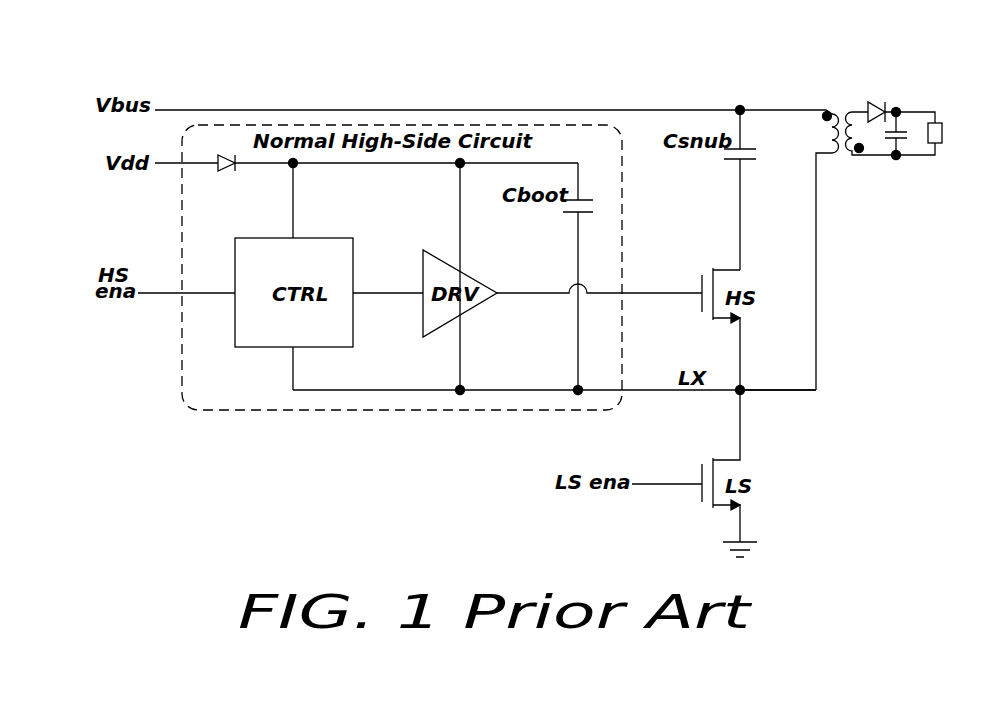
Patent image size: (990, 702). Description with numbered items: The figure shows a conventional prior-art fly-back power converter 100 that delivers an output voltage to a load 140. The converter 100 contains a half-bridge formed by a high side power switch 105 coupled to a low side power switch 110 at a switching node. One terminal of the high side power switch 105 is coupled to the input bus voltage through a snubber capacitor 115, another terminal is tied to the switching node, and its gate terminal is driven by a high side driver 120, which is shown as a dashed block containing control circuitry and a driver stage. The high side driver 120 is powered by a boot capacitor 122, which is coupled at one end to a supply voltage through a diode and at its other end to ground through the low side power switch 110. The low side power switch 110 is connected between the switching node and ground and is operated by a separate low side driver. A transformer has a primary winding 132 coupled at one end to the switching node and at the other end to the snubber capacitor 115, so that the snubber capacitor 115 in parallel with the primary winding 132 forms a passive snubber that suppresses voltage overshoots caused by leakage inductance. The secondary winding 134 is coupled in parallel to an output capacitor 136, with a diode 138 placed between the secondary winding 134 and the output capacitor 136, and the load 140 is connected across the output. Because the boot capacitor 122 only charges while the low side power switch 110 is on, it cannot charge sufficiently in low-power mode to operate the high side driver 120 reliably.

The fly-back power converter 100 is at (190, 56).
The high side power switch 105 is at (707, 271).
The low side power switch 110 is at (707, 461).
The capacitor Csnub 115 is at (752, 163).
The high side driver 120 is at (250, 412).
The boot capacitor Cboot 122 is at (568, 215).
The primary winding 132 is at (832, 111).
The secondary winding 134 is at (860, 155).
The output capacitor 136 is at (900, 158).
The diode 138 is at (878, 102).
The load 140 is at (943, 133).